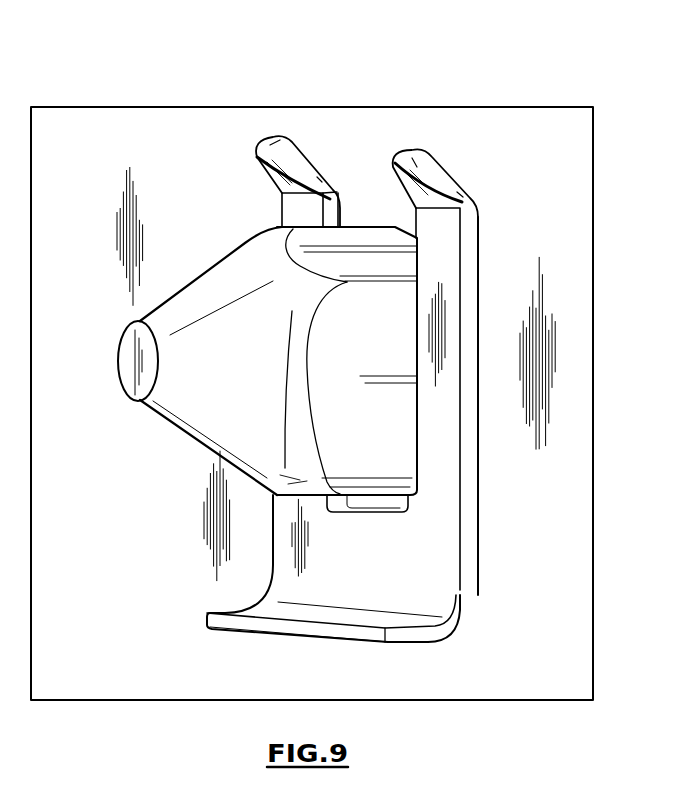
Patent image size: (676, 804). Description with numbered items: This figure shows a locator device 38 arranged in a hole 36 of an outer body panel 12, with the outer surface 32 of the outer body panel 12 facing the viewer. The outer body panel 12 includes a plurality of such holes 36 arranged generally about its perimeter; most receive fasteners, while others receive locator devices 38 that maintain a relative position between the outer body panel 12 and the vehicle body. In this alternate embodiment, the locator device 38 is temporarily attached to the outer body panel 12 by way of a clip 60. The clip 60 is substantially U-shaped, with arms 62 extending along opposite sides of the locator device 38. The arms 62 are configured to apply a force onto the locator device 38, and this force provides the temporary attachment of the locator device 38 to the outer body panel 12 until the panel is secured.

The outer body panel 12 is at (95, 98).
The outer surface 32 is at (172, 140).
The hole 36 is at (365, 238).
The locator device 38 is at (276, 234).
The clip 60 is at (466, 579).
The arms 62 is at (307, 160).